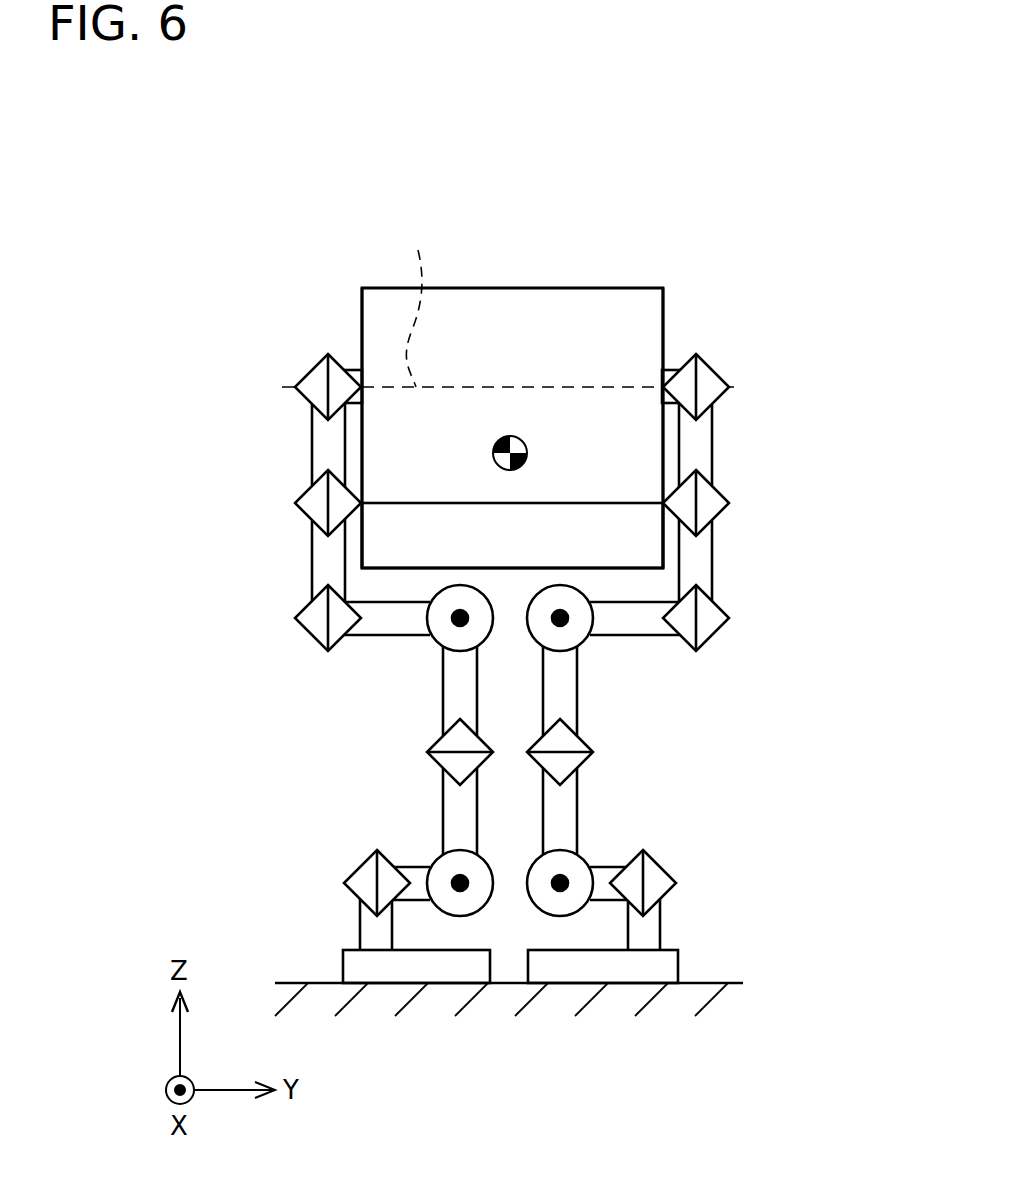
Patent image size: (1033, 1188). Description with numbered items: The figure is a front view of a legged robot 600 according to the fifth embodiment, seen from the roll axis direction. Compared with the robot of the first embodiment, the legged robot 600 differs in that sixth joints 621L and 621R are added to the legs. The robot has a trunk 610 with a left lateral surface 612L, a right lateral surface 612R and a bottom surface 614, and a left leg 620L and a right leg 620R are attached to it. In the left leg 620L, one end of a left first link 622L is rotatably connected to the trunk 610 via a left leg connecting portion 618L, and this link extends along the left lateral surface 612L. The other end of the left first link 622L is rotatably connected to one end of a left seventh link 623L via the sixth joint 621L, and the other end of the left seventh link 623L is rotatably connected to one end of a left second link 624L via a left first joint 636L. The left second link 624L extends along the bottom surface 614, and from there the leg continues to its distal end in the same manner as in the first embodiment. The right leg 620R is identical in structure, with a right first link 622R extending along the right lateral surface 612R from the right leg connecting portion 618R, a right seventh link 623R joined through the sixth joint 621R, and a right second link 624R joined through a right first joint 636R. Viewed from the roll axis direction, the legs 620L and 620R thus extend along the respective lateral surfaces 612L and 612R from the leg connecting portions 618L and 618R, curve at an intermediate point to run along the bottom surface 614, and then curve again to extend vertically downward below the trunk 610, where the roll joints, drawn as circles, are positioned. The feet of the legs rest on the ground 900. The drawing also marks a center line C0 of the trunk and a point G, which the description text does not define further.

The legged robot 600 is at (541, 214).
The trunk 610 is at (683, 318).
The right lateral surface 612R is at (362, 300).
The left lateral surface 612L is at (663, 300).
The bottom surface 614 is at (593, 572).
The right leg connecting portion 618R is at (313, 362).
The left leg connecting portion 618L is at (713, 375).
The right leg 620R is at (290, 563).
The left leg 620L is at (735, 570).
The sixth joint 621R is at (305, 493).
The sixth joint 621L is at (720, 494).
The right first link 622R is at (312, 445).
The left first link 622L is at (713, 445).
The right seventh link 623R is at (312, 572).
The left seventh link 623L is at (713, 570).
The right second link 624R is at (385, 637).
The left second link 624L is at (638, 637).
The right first joint 636R is at (308, 637).
The left first joint 636L is at (714, 633).
The ground 900 is at (712, 983).
The center line C0 is at (511, 300).
The center of gravity G is at (493, 455).